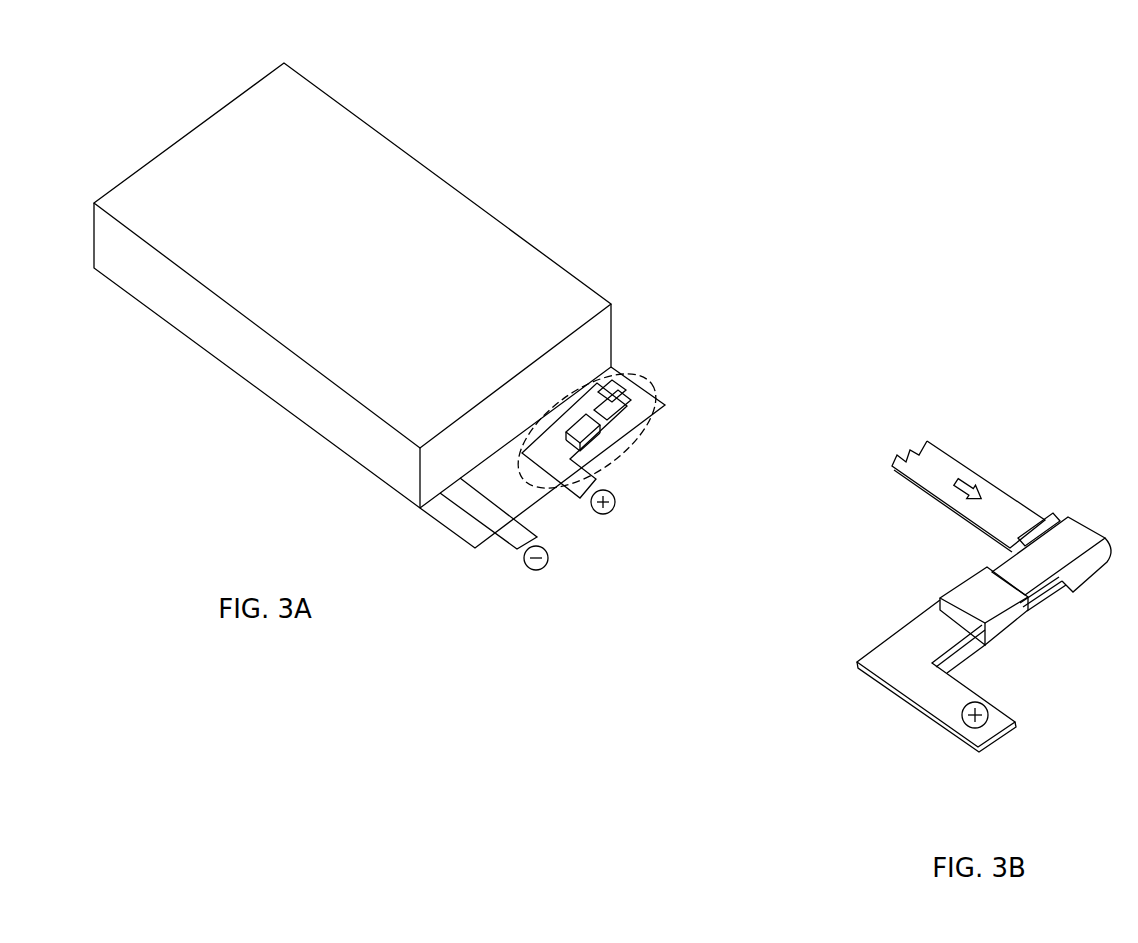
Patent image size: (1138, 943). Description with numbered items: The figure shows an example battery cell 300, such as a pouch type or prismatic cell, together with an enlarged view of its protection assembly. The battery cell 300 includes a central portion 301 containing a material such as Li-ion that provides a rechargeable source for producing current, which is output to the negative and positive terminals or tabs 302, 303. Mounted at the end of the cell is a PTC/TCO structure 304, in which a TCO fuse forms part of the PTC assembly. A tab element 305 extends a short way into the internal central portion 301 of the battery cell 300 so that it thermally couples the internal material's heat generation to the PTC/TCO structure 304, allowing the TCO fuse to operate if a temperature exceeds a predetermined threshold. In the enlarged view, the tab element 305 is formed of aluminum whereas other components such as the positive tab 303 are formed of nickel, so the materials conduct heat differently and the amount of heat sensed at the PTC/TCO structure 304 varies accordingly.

In FIG. 3A, the battery cell 300 is at (185, 117).
In FIG. 3A, the central portion 301 is at (320, 297).
In FIG. 3A, the negative terminal/tab 302 is at (550, 583).
In FIG. 3A, the positive terminal/tab 303 is at (609, 536).
In FIG. 3B, the positive terminal/tab 303 is at (872, 656).
In FIG. 3A, the PTC/TCO structure 304 is at (637, 456).
In FIG. 3B, the PTC/TCO structure 304 is at (867, 567).
In FIG. 3A, the tab element 305 is at (599, 368).
In FIG. 3B, the tab element 305 is at (933, 433).